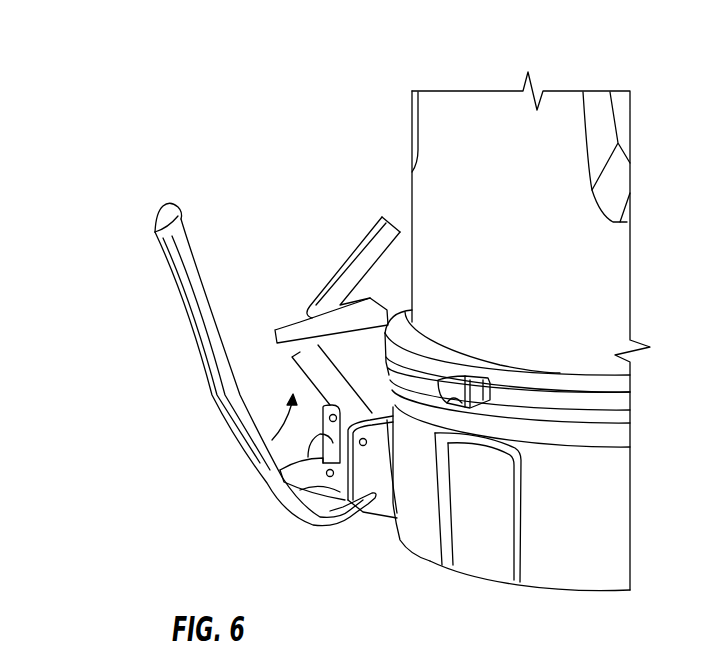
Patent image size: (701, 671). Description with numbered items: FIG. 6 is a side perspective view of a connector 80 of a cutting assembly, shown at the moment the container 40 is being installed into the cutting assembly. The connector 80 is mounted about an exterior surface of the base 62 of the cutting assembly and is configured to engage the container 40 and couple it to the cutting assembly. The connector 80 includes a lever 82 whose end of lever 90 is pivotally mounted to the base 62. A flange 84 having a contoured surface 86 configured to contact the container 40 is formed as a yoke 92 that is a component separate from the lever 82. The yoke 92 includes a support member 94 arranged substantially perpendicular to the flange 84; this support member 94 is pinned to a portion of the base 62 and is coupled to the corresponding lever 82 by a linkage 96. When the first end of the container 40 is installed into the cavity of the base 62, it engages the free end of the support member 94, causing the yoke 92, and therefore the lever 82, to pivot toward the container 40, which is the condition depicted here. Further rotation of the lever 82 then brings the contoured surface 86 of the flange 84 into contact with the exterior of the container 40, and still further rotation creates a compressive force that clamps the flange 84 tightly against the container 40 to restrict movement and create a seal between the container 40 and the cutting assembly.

The container 40 is at (440, 113).
The base 62 is at (540, 570).
The connector 80 is at (201, 449).
The lever 82 is at (208, 392).
The flange 84 is at (325, 270).
The contoured surface 86 is at (366, 252).
The end of lever 90 is at (345, 502).
The yoke 92 is at (287, 438).
The support member 94 is at (268, 393).
The linkage 96 is at (310, 483).